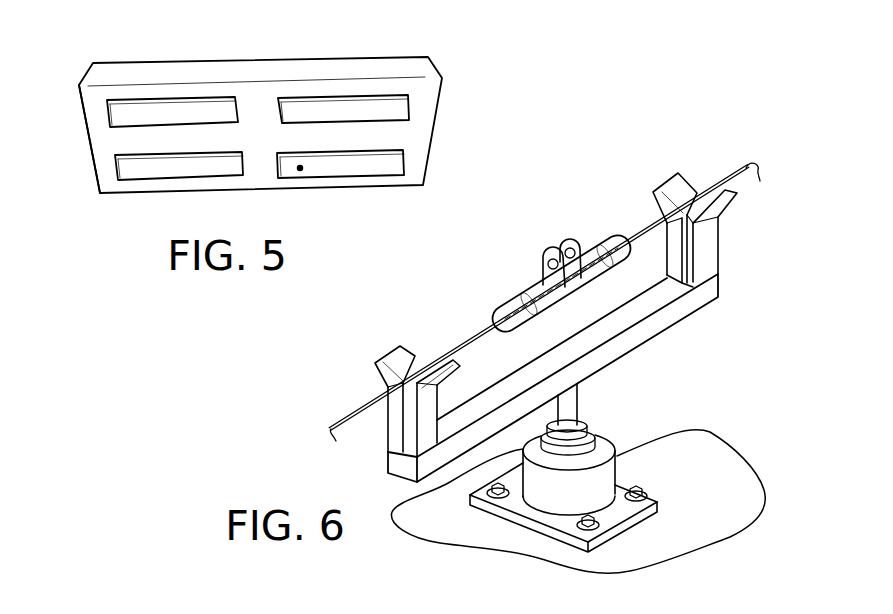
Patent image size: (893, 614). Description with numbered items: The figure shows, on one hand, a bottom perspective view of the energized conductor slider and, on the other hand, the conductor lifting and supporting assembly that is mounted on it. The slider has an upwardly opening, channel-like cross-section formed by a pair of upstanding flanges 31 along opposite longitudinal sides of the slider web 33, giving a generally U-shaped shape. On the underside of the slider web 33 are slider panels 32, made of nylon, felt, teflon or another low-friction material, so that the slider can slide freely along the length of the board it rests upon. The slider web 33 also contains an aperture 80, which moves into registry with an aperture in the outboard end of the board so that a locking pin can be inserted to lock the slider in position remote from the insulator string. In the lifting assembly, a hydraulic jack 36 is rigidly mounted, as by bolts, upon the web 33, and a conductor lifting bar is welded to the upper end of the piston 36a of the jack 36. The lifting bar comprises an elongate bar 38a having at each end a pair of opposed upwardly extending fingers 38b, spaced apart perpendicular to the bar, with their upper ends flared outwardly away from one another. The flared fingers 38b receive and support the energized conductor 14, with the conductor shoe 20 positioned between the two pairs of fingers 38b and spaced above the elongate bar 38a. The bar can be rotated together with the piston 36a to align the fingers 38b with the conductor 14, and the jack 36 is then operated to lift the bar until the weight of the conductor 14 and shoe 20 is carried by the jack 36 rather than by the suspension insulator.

In FIG. 6, the conductor 14 is at (635, 237).
In FIG. 6, the conductor shoe 20 is at (537, 288).
In FIG. 5, the upstanding flanges 31 is at (182, 68).
In FIG. 5, the slider panels 32 is at (143, 113).
In FIG. 5, the slider web 33 is at (103, 138).
In FIG. 6, the slider web 33 is at (692, 512).
In FIG. 6, the hydraulic jack 36 is at (600, 485).
In FIG. 6, the piston 36a is at (568, 393).
In FIG. 6, the elongate bar 38a is at (485, 403).
In FIG. 6, the fingers 38b is at (680, 188).
In FIG. 5, the aperture 80 is at (300, 170).